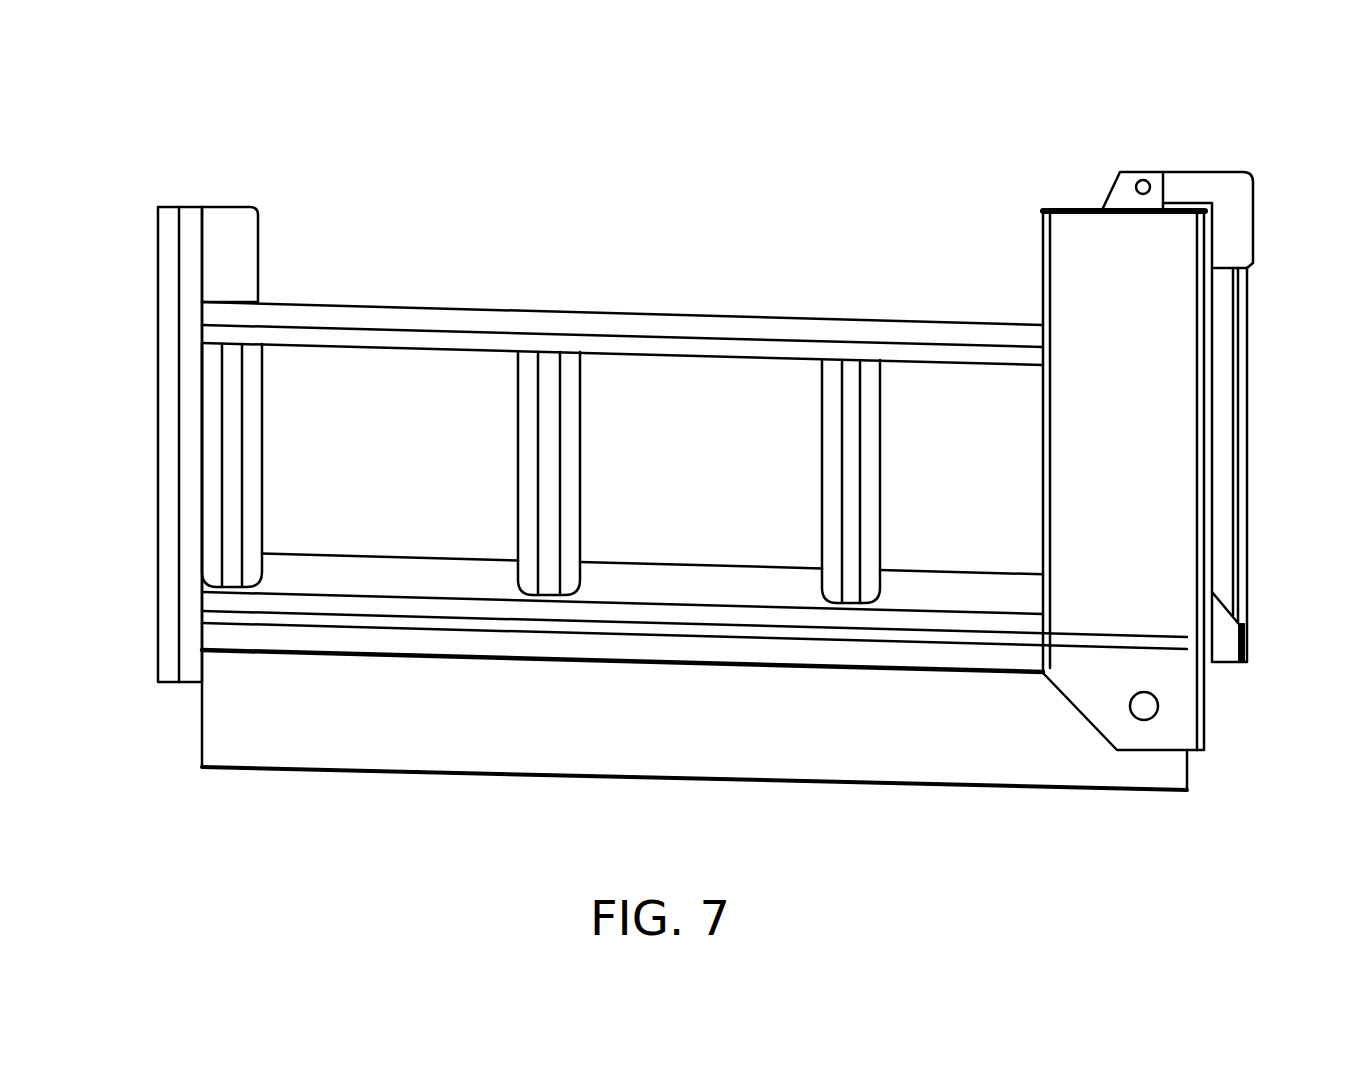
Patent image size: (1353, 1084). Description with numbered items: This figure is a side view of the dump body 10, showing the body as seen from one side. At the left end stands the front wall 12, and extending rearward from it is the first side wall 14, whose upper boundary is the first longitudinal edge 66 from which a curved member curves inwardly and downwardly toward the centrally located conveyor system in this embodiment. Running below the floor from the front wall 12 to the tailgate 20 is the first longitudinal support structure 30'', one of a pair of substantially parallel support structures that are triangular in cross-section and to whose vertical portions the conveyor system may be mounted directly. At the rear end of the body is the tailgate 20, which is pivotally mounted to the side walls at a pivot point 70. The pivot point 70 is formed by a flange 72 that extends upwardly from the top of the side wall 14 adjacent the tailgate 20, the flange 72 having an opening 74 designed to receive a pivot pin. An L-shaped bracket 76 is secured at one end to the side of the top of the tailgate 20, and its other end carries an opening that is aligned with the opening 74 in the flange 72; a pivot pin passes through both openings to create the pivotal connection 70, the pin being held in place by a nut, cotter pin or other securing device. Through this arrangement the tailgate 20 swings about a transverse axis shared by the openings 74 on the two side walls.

The dump body 10 is at (580, 190).
The front wall 12 is at (157, 292).
The first side wall 14 is at (398, 500).
The first longitudinal edge 66 is at (877, 320).
The first longitudinal support structure 30'' is at (694, 544).
The flange 72 is at (1120, 197).
The opening 74 is at (1143, 195).
The pivot point 70 is at (1153, 158).
The L-shaped bracket 76 is at (1227, 190).
The tailgate 20 is at (1250, 393).